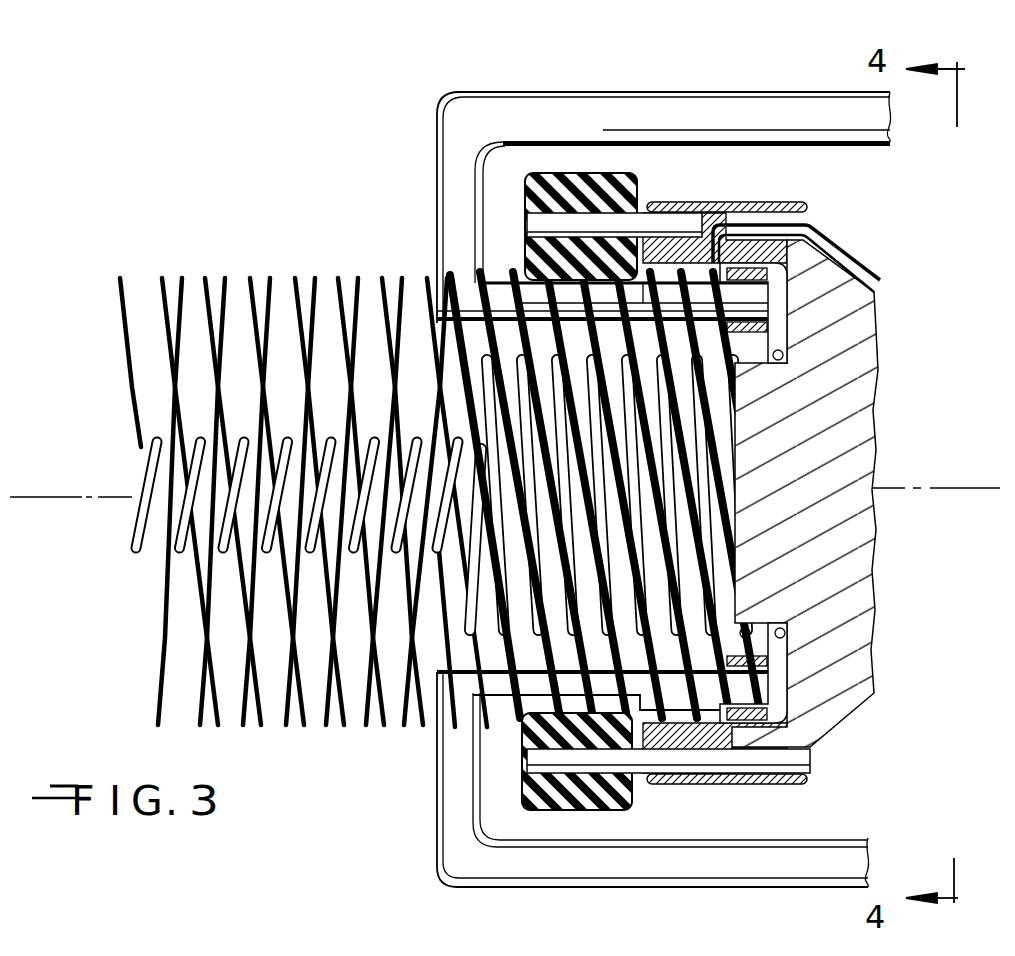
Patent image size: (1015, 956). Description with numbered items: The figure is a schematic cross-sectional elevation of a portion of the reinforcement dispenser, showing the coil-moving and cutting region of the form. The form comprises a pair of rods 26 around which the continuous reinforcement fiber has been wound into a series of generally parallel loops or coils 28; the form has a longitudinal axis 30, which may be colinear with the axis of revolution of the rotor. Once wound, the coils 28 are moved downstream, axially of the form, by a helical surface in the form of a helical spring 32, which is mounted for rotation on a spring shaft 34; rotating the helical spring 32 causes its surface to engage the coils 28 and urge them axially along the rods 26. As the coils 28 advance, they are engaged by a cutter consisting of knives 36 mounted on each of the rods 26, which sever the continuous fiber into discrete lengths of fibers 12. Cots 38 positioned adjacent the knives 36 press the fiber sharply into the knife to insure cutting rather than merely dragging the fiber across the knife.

The discrete lengths of fibers 12 is at (212, 278).
The rods 26 is at (503, 262).
The coils 28 is at (692, 295).
The longitudinal axis 30 is at (905, 489).
The helical spring 32 is at (742, 427).
The spring shaft 34 is at (133, 548).
The knives 36 is at (600, 293).
The cots 38 is at (583, 173).